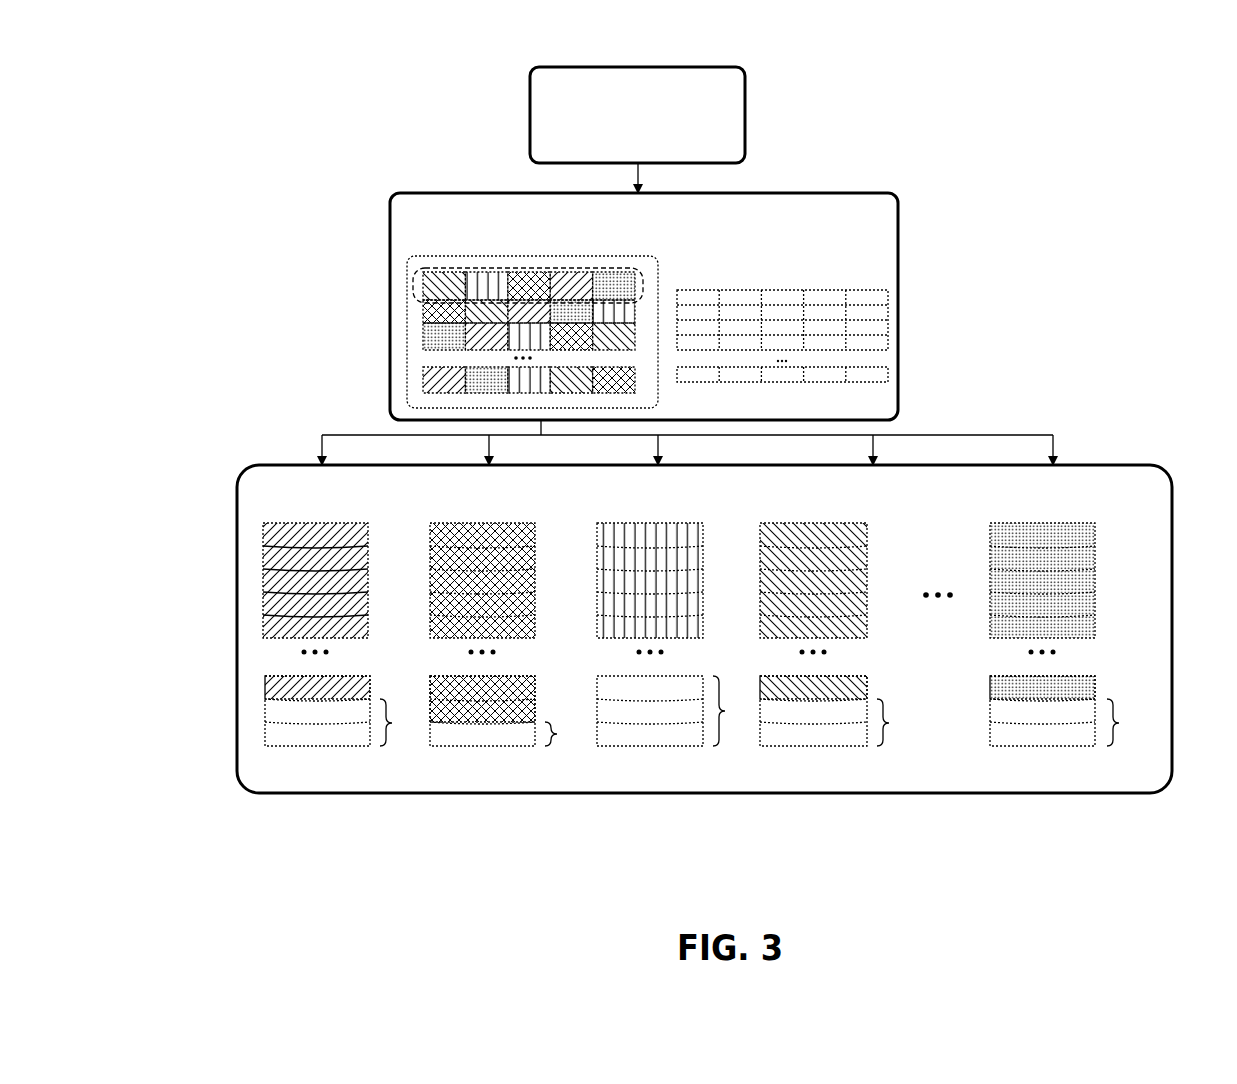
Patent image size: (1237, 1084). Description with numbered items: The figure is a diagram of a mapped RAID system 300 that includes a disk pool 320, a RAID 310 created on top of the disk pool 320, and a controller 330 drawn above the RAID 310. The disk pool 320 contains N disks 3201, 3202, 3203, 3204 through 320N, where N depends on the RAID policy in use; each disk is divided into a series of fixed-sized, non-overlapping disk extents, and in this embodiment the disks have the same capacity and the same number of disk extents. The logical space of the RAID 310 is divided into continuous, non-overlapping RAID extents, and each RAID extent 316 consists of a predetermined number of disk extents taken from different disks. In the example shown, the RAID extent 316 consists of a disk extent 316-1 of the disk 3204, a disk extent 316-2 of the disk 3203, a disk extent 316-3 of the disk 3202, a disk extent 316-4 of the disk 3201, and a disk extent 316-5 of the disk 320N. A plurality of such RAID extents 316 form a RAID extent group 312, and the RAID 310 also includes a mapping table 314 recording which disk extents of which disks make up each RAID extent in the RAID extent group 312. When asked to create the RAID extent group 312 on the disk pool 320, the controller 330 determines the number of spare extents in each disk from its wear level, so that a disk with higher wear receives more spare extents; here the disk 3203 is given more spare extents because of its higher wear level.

The system 300 is at (390, 72).
The controller 330 is at (668, 67).
The RAID 310 is at (850, 193).
The RAID extent group 312 is at (645, 256).
The RAID extent 316 is at (641, 278).
The disk extent 316-1 is at (452, 272).
The disk extent 316-2 is at (490, 272).
The disk extent 316-3 is at (528, 272).
The disk extent 316-4 is at (567, 272).
The disk extent 316-5 is at (608, 272).
The mapping table 314 is at (783, 291).
The disk pool 320 is at (1105, 462).
The disk 3201 is at (316, 520).
The disk 3202 is at (483, 520).
The disk 3203 is at (648, 520).
The disk 3204 is at (810, 520).
The disk 320N is at (1040, 520).